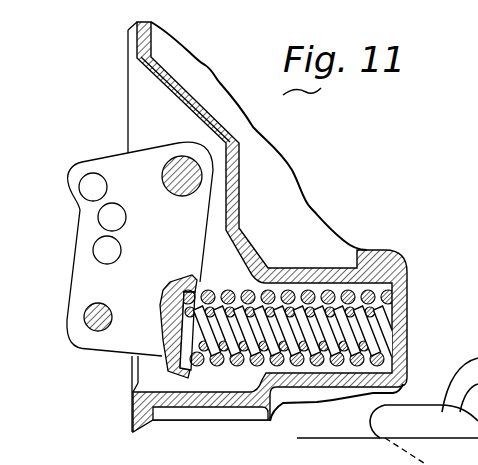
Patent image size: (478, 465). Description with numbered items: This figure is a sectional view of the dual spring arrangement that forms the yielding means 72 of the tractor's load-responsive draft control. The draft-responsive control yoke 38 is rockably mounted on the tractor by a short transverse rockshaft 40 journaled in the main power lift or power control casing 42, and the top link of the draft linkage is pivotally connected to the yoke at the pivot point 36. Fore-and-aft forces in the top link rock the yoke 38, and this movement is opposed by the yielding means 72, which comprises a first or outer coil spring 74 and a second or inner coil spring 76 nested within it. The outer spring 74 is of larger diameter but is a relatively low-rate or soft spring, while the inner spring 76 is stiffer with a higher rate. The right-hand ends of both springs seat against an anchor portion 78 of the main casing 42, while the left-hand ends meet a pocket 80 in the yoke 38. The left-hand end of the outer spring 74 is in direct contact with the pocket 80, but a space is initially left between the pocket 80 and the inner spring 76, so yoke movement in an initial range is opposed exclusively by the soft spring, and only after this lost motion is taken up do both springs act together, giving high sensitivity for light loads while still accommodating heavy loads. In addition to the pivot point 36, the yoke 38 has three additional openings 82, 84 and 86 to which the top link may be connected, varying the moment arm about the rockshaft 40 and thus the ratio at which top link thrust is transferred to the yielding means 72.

The pivot point 36 is at (94, 331).
The control yoke 38 is at (104, 160).
The rockshaft 40 is at (175, 157).
The main casing 42 is at (137, 43).
The yielding means 72 is at (403, 289).
The outer coil spring 74 is at (408, 302).
The inner coil spring 76 is at (380, 328).
The anchor portion 78 is at (406, 352).
The pocket 80 is at (162, 326).
The opening 82 is at (93, 248).
The opening 84 is at (98, 215).
The opening 86 is at (82, 178).